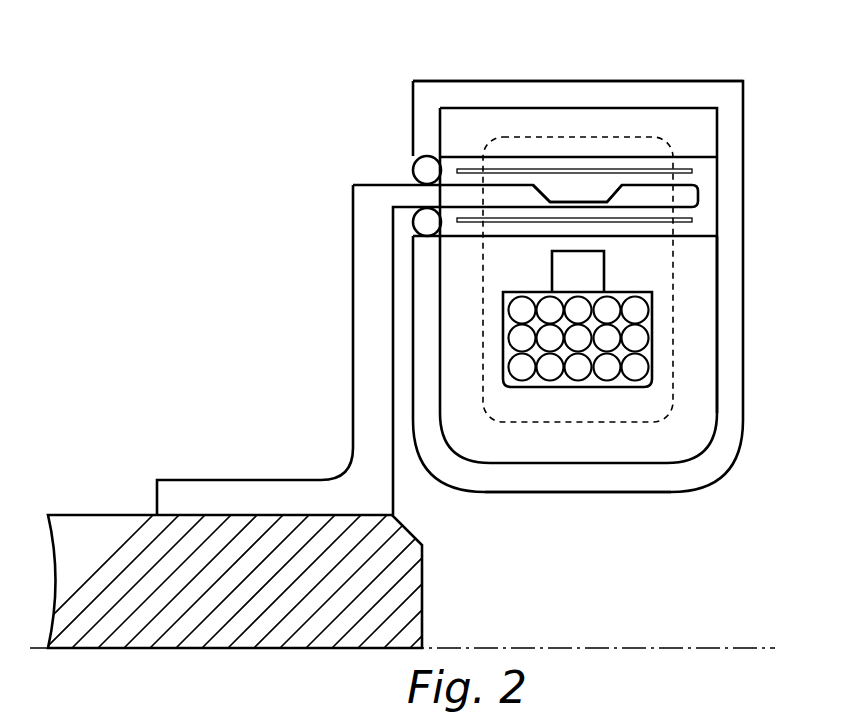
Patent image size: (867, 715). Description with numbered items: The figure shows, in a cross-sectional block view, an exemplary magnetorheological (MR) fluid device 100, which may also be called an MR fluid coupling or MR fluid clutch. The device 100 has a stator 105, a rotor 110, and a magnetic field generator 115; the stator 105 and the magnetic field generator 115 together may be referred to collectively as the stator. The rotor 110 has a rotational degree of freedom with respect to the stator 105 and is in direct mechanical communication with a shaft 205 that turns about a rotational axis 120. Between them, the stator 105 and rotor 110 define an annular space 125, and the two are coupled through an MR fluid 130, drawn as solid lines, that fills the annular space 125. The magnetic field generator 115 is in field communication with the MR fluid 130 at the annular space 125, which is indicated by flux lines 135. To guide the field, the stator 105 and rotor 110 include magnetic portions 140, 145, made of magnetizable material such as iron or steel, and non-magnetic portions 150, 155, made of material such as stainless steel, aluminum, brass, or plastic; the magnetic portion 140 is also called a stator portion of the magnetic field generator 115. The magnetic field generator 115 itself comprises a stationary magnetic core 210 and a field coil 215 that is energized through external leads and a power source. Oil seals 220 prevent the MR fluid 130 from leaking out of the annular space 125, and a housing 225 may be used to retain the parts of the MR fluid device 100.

The MR fluid device 100 is at (752, 110).
The stator 105 is at (472, 126).
The rotor 110 is at (367, 184).
The magnetic field generator 115 is at (717, 358).
The rotational axis 120 is at (683, 648).
The annular space 125 is at (712, 171).
The MR fluid 130 is at (613, 169).
The flux lines 135 is at (667, 415).
The magnetic portion 140 is at (525, 444).
The magnetic portion 145 is at (632, 193).
The non-magnetic portion 150 is at (584, 256).
The non-magnetic portion 155 is at (593, 190).
The shaft 205 is at (98, 515).
The stationary magnetic core 210 is at (650, 465).
The field coil 215 is at (573, 370).
The oil seals 220 is at (425, 172).
The housing 225 is at (412, 95).